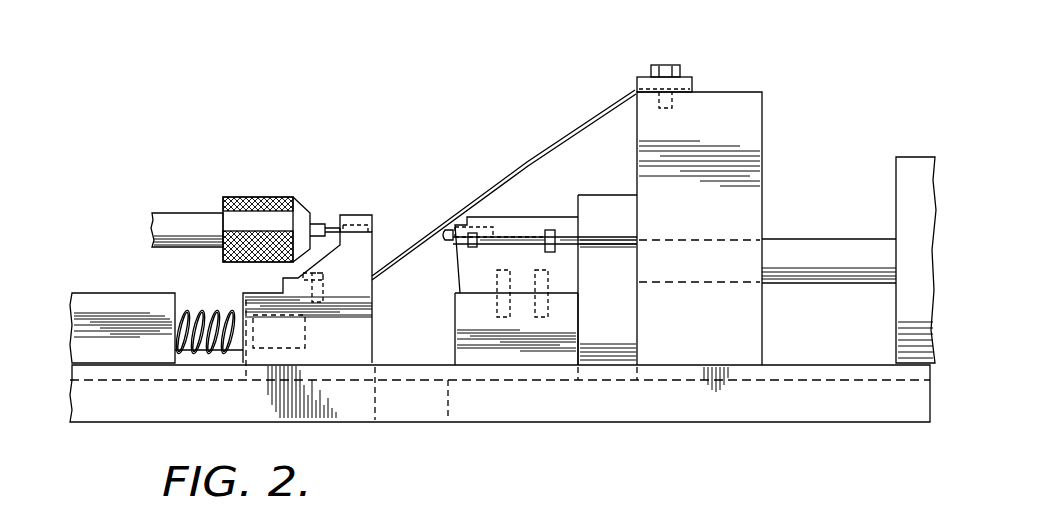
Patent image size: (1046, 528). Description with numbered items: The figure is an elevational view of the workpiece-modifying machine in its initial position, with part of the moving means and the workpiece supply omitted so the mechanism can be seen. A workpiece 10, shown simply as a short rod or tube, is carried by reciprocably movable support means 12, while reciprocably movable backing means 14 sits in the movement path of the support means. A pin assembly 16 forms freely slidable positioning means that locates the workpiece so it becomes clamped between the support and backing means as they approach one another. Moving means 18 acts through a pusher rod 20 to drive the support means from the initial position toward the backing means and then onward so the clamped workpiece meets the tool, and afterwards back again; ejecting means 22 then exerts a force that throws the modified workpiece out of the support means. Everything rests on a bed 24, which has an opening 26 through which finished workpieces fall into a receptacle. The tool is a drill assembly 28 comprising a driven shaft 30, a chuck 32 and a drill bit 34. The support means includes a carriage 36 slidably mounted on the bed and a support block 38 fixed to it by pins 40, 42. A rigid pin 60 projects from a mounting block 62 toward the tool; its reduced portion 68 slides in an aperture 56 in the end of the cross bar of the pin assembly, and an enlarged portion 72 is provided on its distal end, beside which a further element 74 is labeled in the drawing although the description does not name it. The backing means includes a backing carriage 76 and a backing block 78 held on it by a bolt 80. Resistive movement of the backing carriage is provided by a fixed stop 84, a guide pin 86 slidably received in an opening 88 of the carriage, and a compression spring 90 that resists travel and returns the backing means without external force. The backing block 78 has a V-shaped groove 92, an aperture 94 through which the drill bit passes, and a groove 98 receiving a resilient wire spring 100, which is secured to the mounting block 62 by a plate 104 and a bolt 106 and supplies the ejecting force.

The workpiece 10 is at (446, 228).
The support means 12 is at (578, 191).
The backing means 14 is at (365, 213).
The pin assembly 16 is at (501, 232).
The moving means 18 is at (913, 154).
The pusher rod 20 is at (833, 240).
The ejecting means 22 is at (633, 88).
The bed 24 is at (606, 422).
The opening 26 is at (383, 420).
The drill assembly 28 is at (203, 203).
The driven shaft 30 is at (167, 213).
The chuck 32 is at (254, 197).
The drill bit 34 is at (337, 224).
The carriage 36 is at (455, 339).
The support block 38 is at (458, 274).
The pin 40 is at (497, 312).
The pin 42 is at (548, 312).
The aperture 56 is at (550, 229).
The rigid pin 60 is at (593, 237).
The mounting block 62 is at (760, 149).
The reduced portion 68 is at (512, 245).
The enlarged portion 72 is at (472, 248).
The pin 74 is at (577, 252).
The backing carriage 76 is at (372, 331).
The backing block 78 is at (372, 250).
The bolt 80 is at (312, 285).
The fixed stop 84 is at (115, 293).
The guide pin 86 is at (192, 310).
The opening 88 is at (305, 345).
The compression spring 90 is at (227, 310).
The V-shaped groove 92 is at (368, 232).
The aperture 94 is at (343, 218).
The groove 98 is at (364, 281).
The resilient wire spring 100 is at (528, 165).
The plate 104 is at (692, 82).
The bolt 106 is at (670, 65).